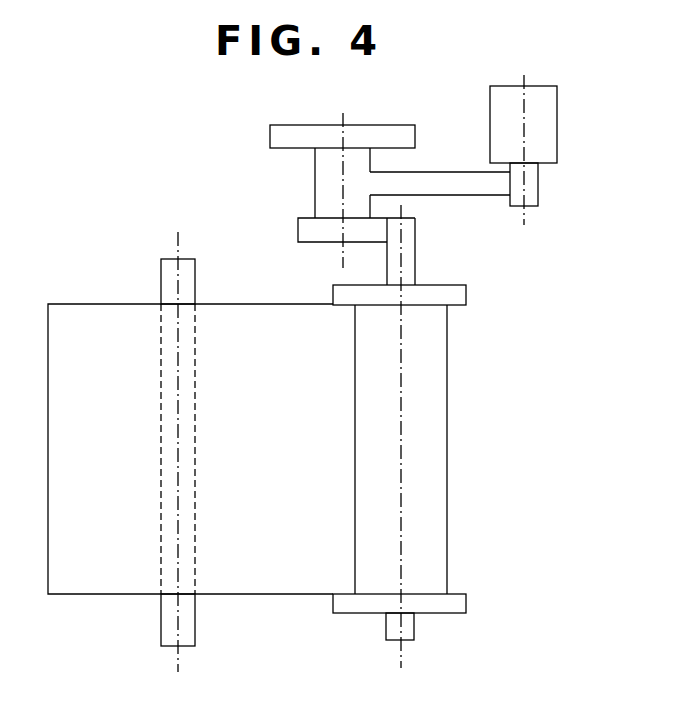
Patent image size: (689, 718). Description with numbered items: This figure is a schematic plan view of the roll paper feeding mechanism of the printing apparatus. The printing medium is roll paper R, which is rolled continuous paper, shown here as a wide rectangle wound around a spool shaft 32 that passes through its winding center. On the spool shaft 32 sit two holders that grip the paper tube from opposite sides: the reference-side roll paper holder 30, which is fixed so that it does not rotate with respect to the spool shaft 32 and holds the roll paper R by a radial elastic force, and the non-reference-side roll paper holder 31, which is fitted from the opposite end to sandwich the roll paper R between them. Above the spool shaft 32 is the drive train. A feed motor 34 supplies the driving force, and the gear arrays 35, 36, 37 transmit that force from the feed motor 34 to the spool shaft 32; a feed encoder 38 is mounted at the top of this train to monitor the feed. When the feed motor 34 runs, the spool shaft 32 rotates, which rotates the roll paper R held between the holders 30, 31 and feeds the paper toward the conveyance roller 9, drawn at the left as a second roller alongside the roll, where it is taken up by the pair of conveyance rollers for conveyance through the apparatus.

The conveyance roller 9 is at (195, 632).
The reference-side roll paper holder 30 is at (466, 600).
The non-reference-side roll paper holder 31 is at (466, 293).
The spool shaft 32 is at (415, 248).
The feed motor 34 is at (557, 110).
The gear array 35 is at (447, 172).
The gear array 36 is at (315, 190).
The gear array 37 is at (298, 230).
The feed encoder 38 is at (270, 137).
The roll paper R is at (265, 596).